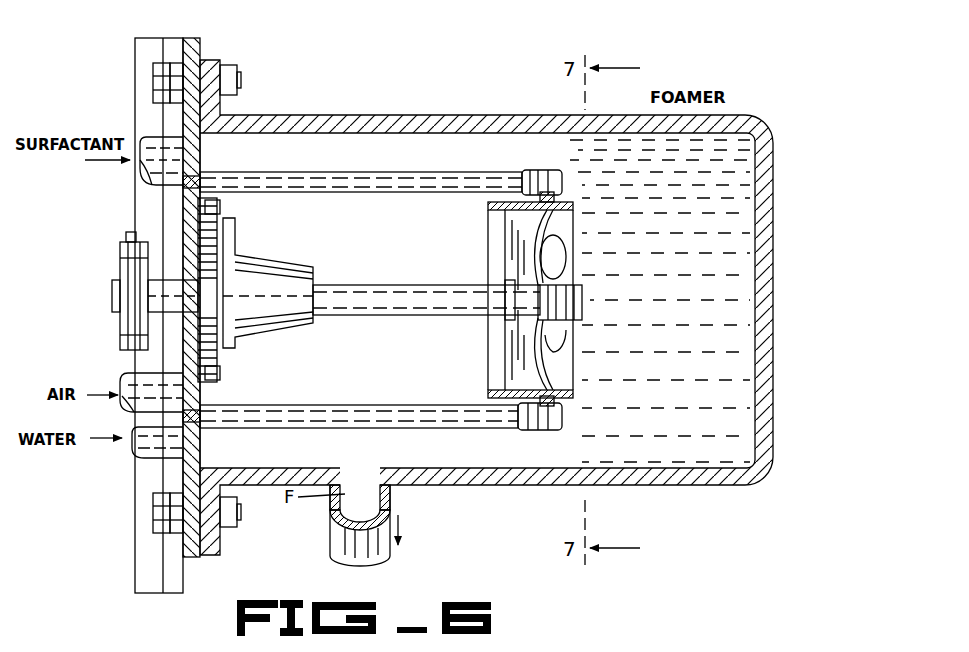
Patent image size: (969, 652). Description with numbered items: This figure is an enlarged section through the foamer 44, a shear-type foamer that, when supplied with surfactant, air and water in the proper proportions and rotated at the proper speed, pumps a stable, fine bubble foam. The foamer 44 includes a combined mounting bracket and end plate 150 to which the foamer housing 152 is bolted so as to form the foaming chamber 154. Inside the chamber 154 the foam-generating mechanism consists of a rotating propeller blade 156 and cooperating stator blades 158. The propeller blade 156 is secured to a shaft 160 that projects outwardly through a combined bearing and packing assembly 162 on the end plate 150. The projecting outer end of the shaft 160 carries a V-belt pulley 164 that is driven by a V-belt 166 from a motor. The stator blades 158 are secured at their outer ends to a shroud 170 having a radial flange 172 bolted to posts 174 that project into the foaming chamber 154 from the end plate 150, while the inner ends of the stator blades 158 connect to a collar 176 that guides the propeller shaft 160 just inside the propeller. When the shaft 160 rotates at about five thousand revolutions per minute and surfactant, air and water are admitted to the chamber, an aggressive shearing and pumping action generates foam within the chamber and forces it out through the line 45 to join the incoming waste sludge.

The foamer 44 is at (778, 108).
The line 45 is at (335, 531).
The combined mounting bracket and end plate 150 is at (190, 50).
The foamer housing 152 is at (348, 117).
The chamber 154 is at (433, 140).
The propeller blade 156 is at (556, 258).
The stator blades 158 is at (538, 228).
The shaft 160 is at (428, 296).
The combined bearing and packing assembly 162 is at (262, 266).
The V-belt pulley 164 is at (118, 258).
The V-belt 166 is at (128, 234).
The shroud 170 is at (570, 381).
The radial flange 172 is at (545, 425).
The posts 174 is at (298, 178).
The collar 176 is at (498, 324).